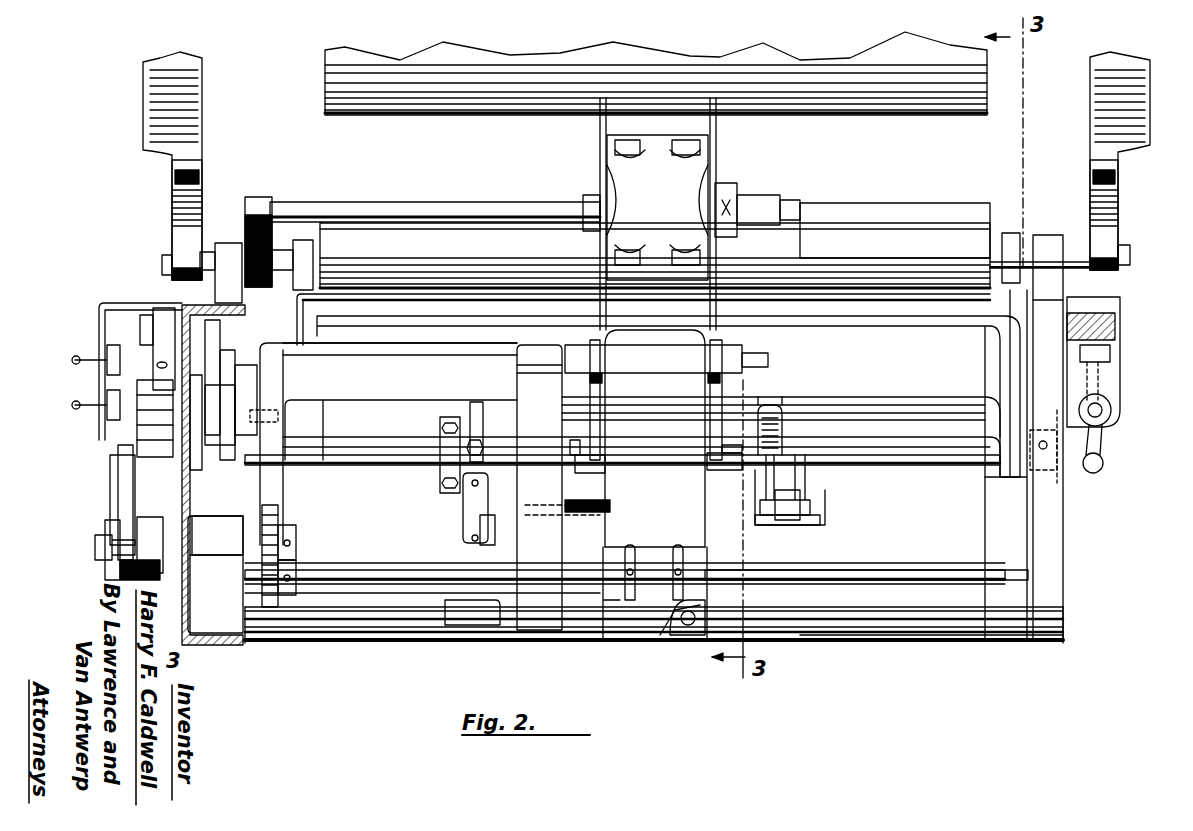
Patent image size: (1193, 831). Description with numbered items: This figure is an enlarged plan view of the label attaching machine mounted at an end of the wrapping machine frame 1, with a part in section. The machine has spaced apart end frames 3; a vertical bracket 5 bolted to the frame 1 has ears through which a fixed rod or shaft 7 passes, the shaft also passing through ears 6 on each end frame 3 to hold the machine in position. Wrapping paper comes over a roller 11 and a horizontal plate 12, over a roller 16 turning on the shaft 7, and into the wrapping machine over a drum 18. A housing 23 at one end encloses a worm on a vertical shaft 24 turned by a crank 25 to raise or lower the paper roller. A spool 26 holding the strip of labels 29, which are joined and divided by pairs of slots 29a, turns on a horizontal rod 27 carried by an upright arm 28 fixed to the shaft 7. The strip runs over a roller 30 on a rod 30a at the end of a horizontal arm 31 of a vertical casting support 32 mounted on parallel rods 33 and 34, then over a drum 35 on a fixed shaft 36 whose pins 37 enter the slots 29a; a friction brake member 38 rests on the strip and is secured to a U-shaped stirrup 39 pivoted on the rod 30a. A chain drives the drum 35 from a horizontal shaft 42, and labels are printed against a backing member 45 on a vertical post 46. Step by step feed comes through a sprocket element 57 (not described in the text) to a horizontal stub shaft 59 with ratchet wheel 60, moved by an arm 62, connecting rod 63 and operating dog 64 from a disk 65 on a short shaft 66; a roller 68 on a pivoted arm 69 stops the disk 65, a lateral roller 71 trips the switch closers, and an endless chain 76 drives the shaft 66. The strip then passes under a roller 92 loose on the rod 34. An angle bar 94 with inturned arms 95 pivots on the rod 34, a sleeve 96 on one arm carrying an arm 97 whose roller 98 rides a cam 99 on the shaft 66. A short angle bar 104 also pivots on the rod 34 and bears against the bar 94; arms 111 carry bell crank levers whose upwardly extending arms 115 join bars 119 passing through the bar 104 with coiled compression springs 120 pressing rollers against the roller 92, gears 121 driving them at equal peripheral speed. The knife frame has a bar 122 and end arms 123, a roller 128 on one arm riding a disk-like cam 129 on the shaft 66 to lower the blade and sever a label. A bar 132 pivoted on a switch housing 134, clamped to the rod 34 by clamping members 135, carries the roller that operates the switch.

The wrapping machine frame 1 is at (200, 105).
The end frames 3 is at (1057, 514).
The vertical bracket 5 is at (197, 200).
The ears 6 is at (1048, 248).
The rod or shaft 7 is at (1078, 258).
The roller 11 is at (960, 645).
The horizontal plate 12 is at (975, 520).
The roller 16 is at (862, 213).
The drum 18 is at (942, 112).
The housing 23 is at (1115, 378).
The vertical shaft 24 is at (1100, 410).
The crank 25 is at (1095, 455).
The spool 26 is at (725, 185).
The horizontal rod 27 is at (430, 210).
The upright arm 28 is at (270, 220).
The labels 29 is at (640, 185).
The slots 29a is at (695, 145).
The roller 30 is at (740, 330).
The rod 30a is at (770, 360).
The horizontal arm 31 is at (530, 392).
The vertical casting support 32 is at (440, 645).
The rod 33 is at (380, 645).
The rod 34 is at (405, 468).
The drum 35 is at (715, 580).
The fixed rod or shaft 36 is at (572, 615).
The pins 37 is at (678, 572).
The friction brake member 38 is at (700, 530).
The U-shaped stirrup 39 is at (668, 370).
The horizontal shaft 42 is at (385, 590).
The backing member 45 is at (670, 640).
The vertical post 46 is at (688, 626).
The rack 57 is at (275, 512).
The horizontal stub shaft 59 is at (190, 541).
The ratchet wheel 60 is at (145, 527).
The arm 62 is at (115, 550).
The connecting rod 63 is at (160, 525).
The operating dog 64 is at (190, 590).
The disk 65 is at (130, 445).
The short shaft 66 is at (150, 420).
The roller 68 is at (130, 385).
The pivotally mounted arm 69 is at (158, 355).
The roller 71 is at (128, 470).
The endless chain 76 is at (210, 258).
The roller 92 is at (728, 460).
The angle bar 94 is at (910, 388).
The inturned arms 95 is at (278, 437).
The sleeve 96 is at (260, 450).
The arm 97 is at (195, 440).
The roller 98 is at (245, 385).
The cam 99 is at (200, 330).
The short angle bar 104 is at (768, 415).
The arms 111 is at (570, 505).
The upwardly extending arm 115 is at (812, 515).
The bars 119 is at (800, 482).
The coiled compression springs 120 is at (785, 428).
The gears 121 is at (590, 462).
The bar 122 is at (420, 300).
The end arms 123 is at (350, 318).
The roller 128 is at (265, 355).
The disk-like cam 129 is at (285, 400).
The bar 132 is at (480, 548).
The switch housing 134 is at (465, 510).
The clamping members 135 is at (440, 435).